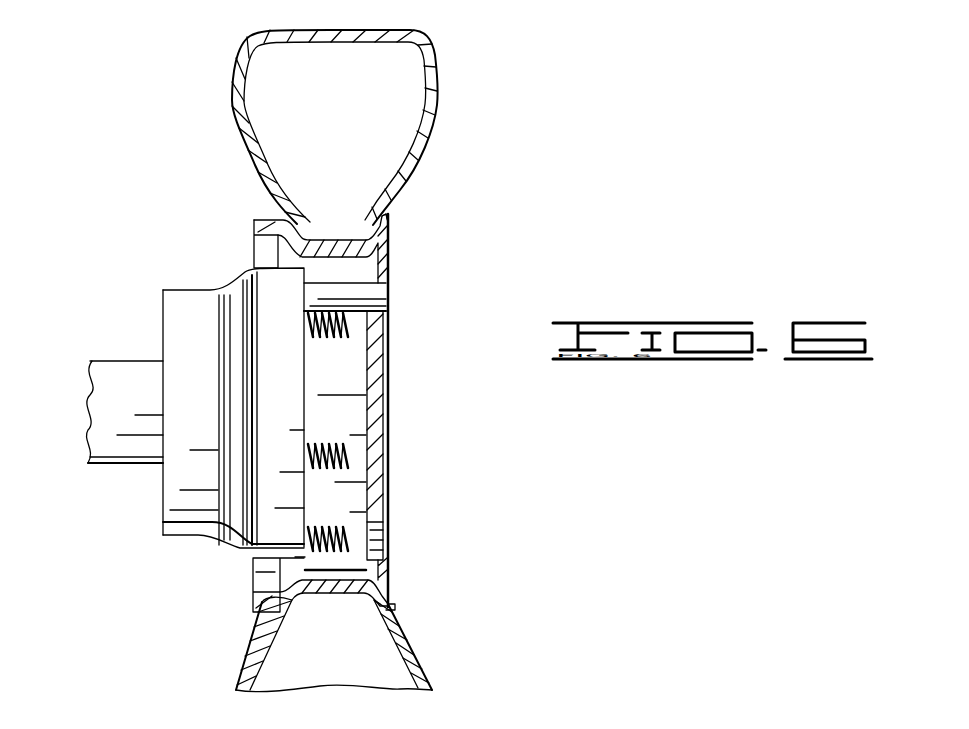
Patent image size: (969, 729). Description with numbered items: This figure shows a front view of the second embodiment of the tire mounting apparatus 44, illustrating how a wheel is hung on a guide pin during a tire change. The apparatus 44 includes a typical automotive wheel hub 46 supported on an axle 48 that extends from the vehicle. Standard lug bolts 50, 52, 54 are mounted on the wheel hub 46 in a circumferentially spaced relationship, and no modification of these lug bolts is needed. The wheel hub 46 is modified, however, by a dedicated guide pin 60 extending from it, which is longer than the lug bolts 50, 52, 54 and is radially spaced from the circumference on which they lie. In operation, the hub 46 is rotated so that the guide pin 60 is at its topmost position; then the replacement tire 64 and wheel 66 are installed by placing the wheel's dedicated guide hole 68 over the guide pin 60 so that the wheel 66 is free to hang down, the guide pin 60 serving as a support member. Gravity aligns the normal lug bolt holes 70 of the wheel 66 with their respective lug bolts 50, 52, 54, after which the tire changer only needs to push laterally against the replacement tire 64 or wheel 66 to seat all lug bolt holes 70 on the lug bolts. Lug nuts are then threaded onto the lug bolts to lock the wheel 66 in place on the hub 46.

The tire mounting apparatus 44 is at (406, 497).
The wheel hub 46 is at (273, 333).
The axle 48 is at (135, 380).
The lug bolt 50 is at (340, 332).
The lug bolt 52 is at (343, 440).
The lug bolt 54 is at (368, 570).
The guide pin 60 is at (378, 296).
The replacement tire 64 is at (432, 140).
The wheel 66 is at (388, 240).
The guide hole 68 is at (386, 290).
The lug bolt holes 70 is at (386, 326).